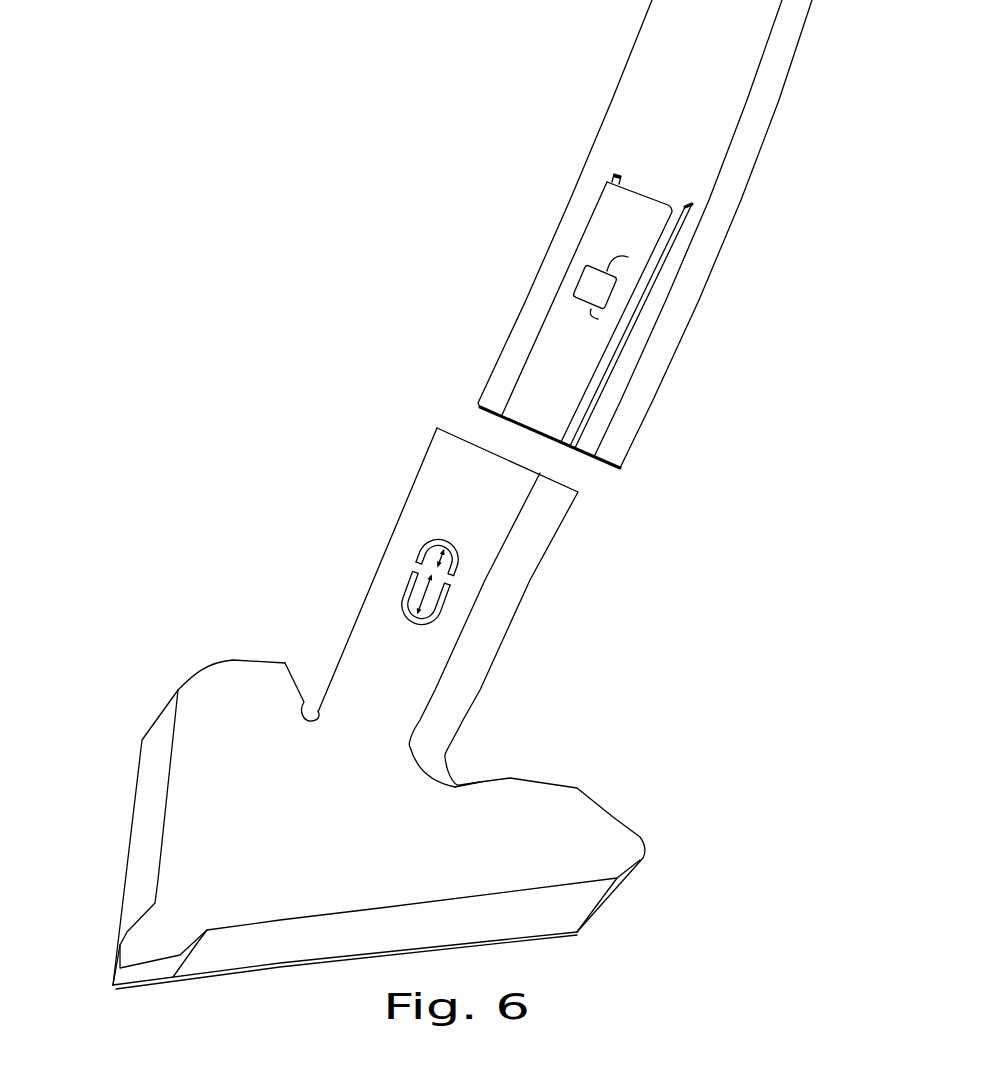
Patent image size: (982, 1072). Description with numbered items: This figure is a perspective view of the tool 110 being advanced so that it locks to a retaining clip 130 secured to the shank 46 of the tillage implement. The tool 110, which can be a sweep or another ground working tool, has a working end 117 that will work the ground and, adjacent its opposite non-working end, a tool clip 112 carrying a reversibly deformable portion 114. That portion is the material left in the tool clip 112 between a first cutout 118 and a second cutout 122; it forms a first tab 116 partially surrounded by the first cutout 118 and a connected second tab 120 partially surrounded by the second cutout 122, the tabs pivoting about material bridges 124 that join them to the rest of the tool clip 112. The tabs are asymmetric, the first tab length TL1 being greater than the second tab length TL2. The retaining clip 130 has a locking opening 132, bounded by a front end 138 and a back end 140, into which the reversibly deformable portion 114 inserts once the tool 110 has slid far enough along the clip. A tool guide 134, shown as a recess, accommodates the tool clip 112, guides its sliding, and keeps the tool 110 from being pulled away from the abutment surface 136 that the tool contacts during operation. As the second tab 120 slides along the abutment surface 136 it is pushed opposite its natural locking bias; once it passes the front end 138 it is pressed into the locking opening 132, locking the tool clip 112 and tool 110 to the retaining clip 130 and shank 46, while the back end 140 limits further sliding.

The shank 46 is at (755, 157).
The tool 110 is at (266, 617).
The tool clip 112 is at (406, 502).
The reversibly deformable portion 114 is at (426, 524).
The first tab 116 is at (460, 438).
The working end 117 is at (113, 985).
The first cutout 118 is at (414, 627).
The second tab 120 is at (458, 552).
The second cutout 122 is at (458, 570).
The material bridges 124 is at (421, 566).
The retaining clip 130 is at (640, 197).
The locking opening 132 is at (590, 284).
The tool guide 134 is at (608, 372).
The abutment surface 136 is at (584, 367).
The front end 138 is at (598, 319).
The back end 140 is at (628, 257).
The first tab length TL1 is at (412, 594).
The second tab length TL2 is at (438, 552).